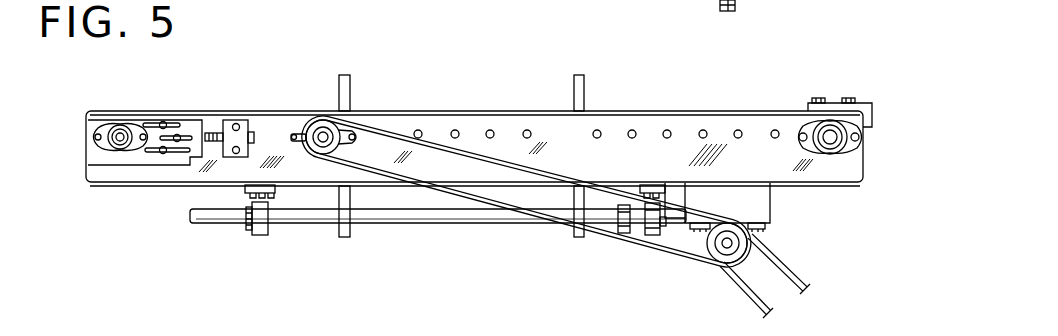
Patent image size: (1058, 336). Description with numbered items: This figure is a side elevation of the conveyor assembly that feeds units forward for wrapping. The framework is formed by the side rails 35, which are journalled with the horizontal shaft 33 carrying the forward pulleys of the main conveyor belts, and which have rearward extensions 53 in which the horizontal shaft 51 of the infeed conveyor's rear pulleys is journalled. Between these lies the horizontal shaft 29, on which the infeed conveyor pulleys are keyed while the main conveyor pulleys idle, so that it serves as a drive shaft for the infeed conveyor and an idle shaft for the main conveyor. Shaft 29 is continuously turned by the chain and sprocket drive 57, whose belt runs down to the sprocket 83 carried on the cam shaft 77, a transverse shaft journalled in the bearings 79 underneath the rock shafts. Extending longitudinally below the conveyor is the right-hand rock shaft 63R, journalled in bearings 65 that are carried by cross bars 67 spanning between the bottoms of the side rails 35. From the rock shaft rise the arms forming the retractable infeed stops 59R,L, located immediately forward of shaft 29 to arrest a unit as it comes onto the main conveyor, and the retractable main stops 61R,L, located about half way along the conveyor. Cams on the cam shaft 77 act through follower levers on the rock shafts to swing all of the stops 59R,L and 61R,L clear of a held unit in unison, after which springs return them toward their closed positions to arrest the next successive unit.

The rearward extensions 53 is at (85, 172).
The horizontal shaft 51 is at (157, 84).
The horizontal shaft 29 is at (323, 134).
The chain and sprocket drive 57 is at (488, 0).
The retractable infeed stops 59R,L is at (347, 72).
The retractable main stops 61R,L is at (580, 72).
The right-hand rock shaft 63R is at (508, 225).
The cross bars 67 is at (245, 189).
The bearings 65 is at (258, 236).
The bearings 79 is at (768, 222).
The sprocket 83 is at (760, 198).
The cam shaft 77 is at (736, 9).
The horizontal shaft 33 is at (830, 140).
The side rails 35 is at (843, 184).